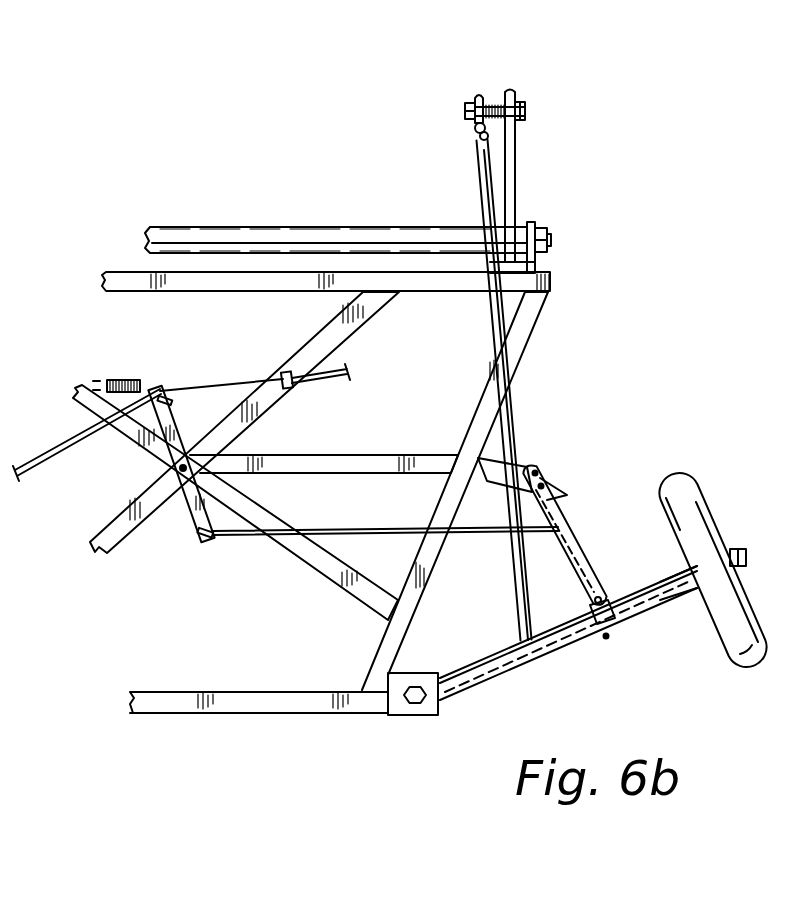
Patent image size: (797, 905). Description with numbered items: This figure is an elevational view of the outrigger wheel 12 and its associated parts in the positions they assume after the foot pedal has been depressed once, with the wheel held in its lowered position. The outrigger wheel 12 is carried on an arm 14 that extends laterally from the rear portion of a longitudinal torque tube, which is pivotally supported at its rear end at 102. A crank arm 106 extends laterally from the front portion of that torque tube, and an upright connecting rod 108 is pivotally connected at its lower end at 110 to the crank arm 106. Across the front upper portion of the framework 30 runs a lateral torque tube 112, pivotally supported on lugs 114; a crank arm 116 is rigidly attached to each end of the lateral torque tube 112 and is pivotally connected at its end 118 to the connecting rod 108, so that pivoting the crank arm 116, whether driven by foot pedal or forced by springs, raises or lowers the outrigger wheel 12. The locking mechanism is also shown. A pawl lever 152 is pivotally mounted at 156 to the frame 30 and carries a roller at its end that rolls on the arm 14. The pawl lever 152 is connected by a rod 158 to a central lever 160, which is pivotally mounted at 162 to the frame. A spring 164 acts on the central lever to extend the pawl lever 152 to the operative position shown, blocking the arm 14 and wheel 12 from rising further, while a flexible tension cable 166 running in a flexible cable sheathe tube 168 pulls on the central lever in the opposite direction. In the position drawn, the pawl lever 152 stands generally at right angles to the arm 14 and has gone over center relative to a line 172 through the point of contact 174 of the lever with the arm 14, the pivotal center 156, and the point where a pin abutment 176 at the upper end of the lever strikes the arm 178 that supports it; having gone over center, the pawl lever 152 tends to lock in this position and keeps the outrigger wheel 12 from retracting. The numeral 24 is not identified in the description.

The outrigger wheel 12 is at (693, 473).
The arm 14 is at (657, 606).
The frame 24 is at (194, 486).
The framework 30 is at (550, 287).
The rear pivotal support 102 is at (425, 703).
The crank arm 106 is at (513, 663).
The connecting rod 108 is at (505, 318).
The lower pivotal connection 110 is at (520, 633).
The lateral torque tube 112 is at (370, 224).
The lug 114 is at (533, 267).
The crank arm 116 is at (517, 170).
The crank arm end 118 is at (493, 98).
The pawl lever 152 is at (585, 555).
The pivotal mounting 156 is at (550, 484).
The rod 158 is at (78, 447).
The central lever 160 is at (193, 512).
The central lever pivotal mounting 162 is at (180, 468).
The spring 164 is at (118, 377).
The flexible tension cable 166 is at (284, 372).
The flexible cable sheathe tube 168 is at (347, 368).
The line 172 is at (606, 642).
The point of contact 174 is at (620, 612).
The pin abutment 176 is at (530, 458).
The arm 178 is at (478, 485).